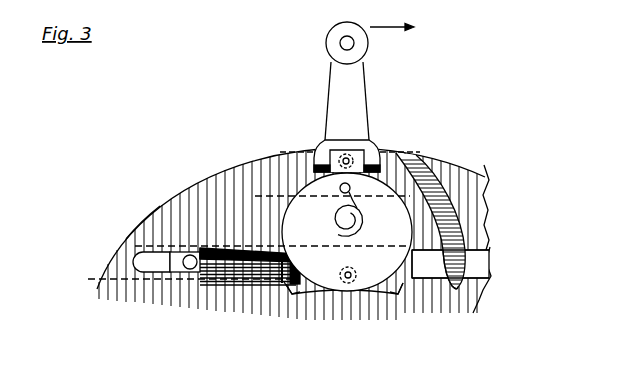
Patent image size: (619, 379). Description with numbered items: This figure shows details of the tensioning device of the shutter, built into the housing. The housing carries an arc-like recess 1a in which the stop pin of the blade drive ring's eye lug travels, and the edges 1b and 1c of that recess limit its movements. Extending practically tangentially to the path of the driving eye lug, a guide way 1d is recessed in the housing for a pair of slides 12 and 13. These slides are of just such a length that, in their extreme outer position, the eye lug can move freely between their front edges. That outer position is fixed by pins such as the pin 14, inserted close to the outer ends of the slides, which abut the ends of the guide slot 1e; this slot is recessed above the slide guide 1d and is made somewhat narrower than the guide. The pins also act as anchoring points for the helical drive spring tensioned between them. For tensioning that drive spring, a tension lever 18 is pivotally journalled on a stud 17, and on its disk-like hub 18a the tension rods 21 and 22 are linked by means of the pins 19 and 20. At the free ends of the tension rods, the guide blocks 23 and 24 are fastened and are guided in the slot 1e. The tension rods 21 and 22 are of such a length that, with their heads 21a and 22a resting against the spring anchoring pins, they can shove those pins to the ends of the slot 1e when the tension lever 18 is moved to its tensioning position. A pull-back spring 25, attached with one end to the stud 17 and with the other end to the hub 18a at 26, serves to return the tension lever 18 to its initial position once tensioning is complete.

The arc-like recess 1a is at (367, 296).
The edge 1b is at (292, 298).
The edge 1c is at (399, 298).
The guide way 1d is at (143, 243).
The guide slot 1e is at (145, 263).
The slide 12 is at (172, 270).
The slide 13 is at (487, 272).
The pin 14 is at (190, 270).
The stud 17 is at (353, 216).
The tension lever 18 is at (328, 38).
The disk-like hub 18a is at (294, 163).
The pin 19 is at (347, 278).
The pin 20 is at (351, 158).
The tension rod 21 is at (277, 264).
The head 21a is at (196, 245).
The tension rod 22 is at (435, 190).
The head 22a is at (472, 264).
The guide block 23 is at (218, 276).
The guide block 24 is at (456, 288).
The pull-back spring 25 is at (340, 188).
The attachment point on hub 26 is at (303, 175).